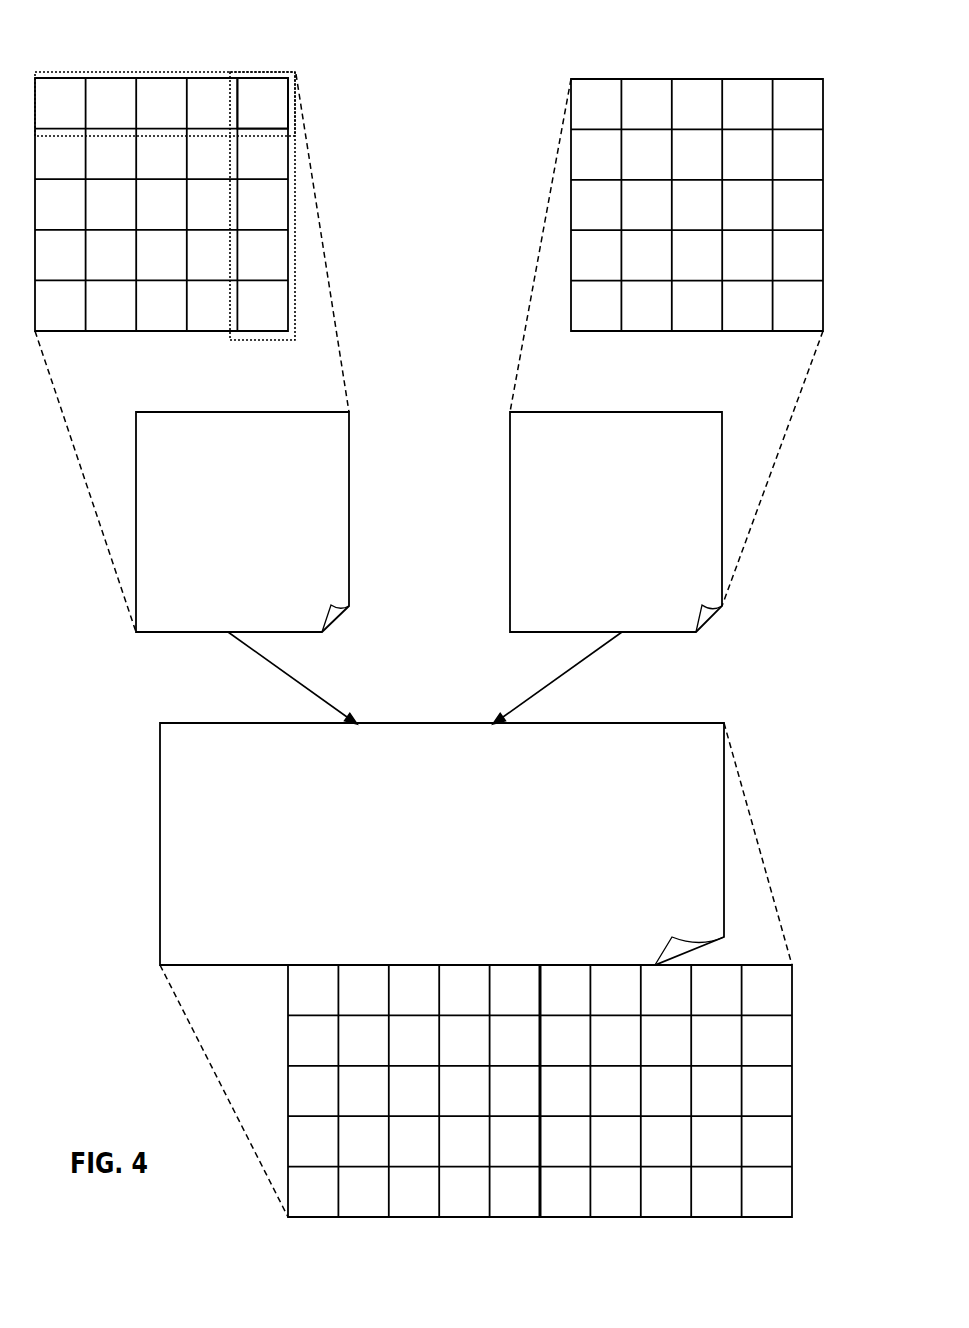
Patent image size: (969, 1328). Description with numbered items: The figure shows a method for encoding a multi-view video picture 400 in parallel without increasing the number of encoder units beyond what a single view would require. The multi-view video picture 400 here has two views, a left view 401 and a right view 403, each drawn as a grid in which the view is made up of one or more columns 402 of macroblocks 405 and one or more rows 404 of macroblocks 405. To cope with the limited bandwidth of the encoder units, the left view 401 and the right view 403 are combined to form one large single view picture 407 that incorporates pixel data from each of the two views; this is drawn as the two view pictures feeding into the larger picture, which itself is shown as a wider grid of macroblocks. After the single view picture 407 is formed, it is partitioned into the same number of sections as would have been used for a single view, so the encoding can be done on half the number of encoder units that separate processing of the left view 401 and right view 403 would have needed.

The multi-view video picture 400 is at (88, 40).
The left view 401 is at (349, 522).
The columns of macroblocks 402 is at (201, 72).
The right view 403 is at (510, 522).
The rows of macroblocks 404 is at (251, 341).
The macroblock 405 is at (257, 92).
The single view picture 407 is at (444, 724).